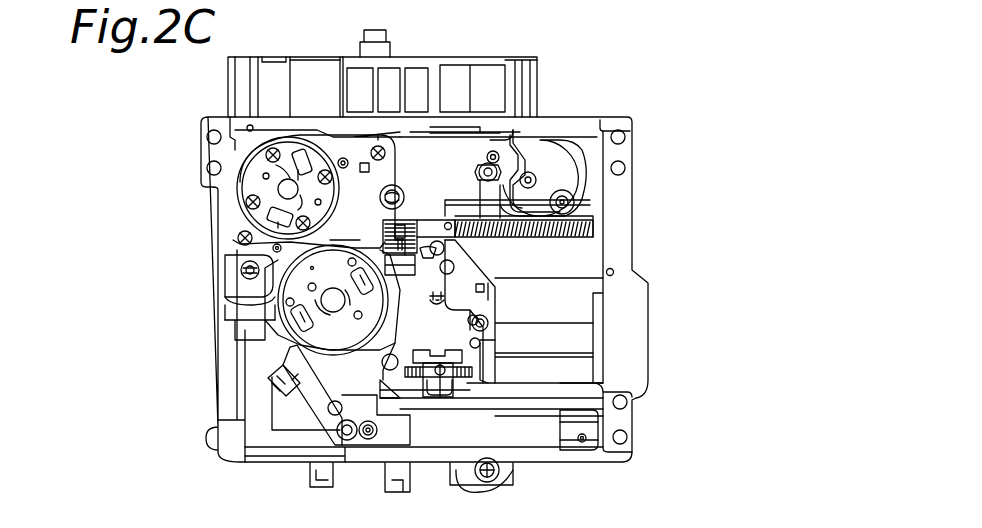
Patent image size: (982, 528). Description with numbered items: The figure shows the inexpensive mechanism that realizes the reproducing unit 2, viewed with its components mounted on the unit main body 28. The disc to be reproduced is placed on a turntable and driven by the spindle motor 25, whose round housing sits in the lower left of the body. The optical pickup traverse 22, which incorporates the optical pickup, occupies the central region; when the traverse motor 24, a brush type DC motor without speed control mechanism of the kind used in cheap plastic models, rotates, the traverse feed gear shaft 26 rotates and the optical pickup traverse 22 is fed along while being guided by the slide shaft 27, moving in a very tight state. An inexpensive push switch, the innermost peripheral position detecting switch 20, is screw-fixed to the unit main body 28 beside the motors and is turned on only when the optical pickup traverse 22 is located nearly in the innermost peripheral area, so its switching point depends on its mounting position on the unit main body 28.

The reproducing unit 2 is at (668, 356).
The innermost peripheral position detecting switch 20 is at (235, 252).
The optical pickup traverse 22 is at (448, 292).
The traverse motor 24 is at (207, 173).
The spindle motor 25 is at (297, 341).
The traverse feed gear shaft 26 is at (565, 220).
The slide shaft 27 is at (578, 397).
The unit main body 28 is at (547, 120).